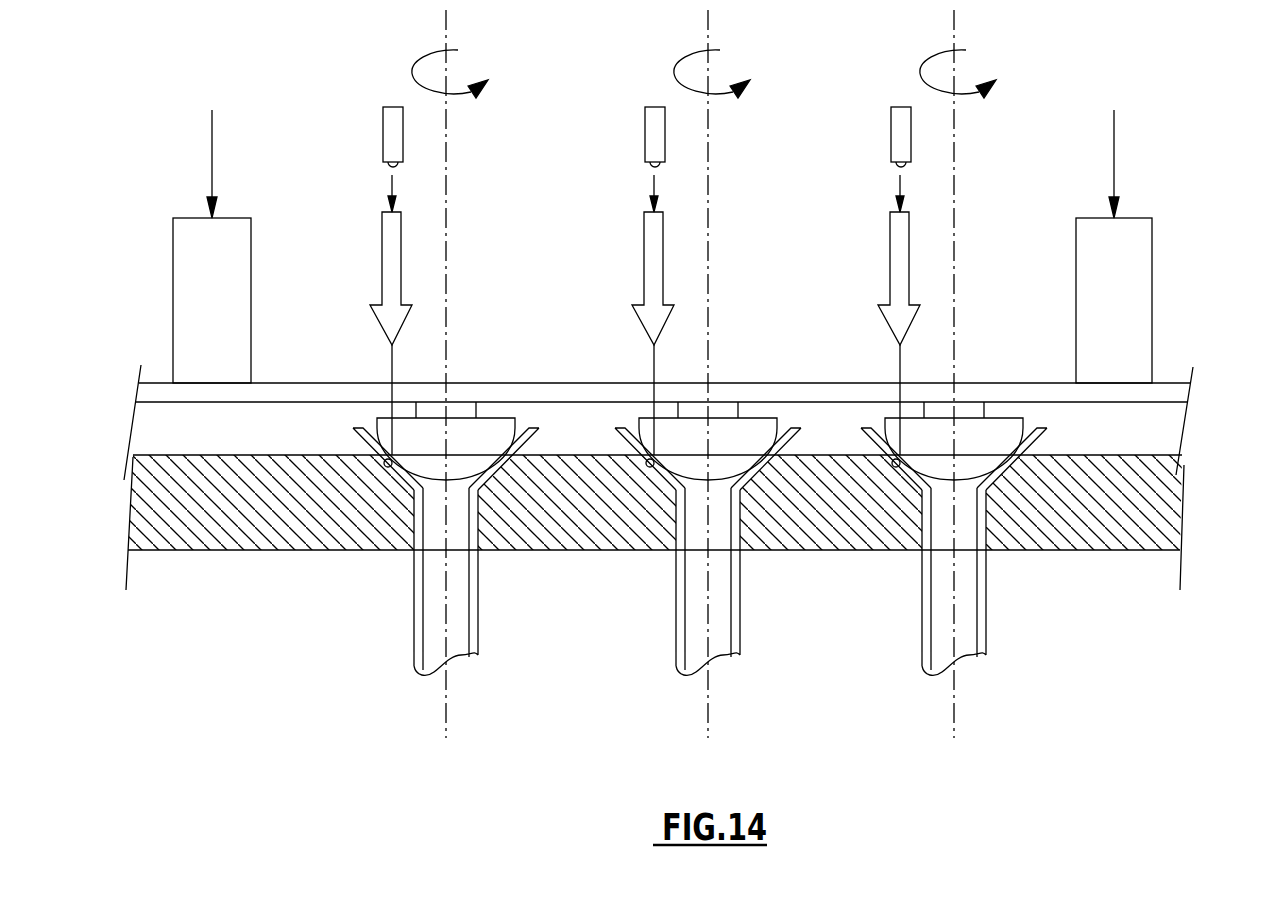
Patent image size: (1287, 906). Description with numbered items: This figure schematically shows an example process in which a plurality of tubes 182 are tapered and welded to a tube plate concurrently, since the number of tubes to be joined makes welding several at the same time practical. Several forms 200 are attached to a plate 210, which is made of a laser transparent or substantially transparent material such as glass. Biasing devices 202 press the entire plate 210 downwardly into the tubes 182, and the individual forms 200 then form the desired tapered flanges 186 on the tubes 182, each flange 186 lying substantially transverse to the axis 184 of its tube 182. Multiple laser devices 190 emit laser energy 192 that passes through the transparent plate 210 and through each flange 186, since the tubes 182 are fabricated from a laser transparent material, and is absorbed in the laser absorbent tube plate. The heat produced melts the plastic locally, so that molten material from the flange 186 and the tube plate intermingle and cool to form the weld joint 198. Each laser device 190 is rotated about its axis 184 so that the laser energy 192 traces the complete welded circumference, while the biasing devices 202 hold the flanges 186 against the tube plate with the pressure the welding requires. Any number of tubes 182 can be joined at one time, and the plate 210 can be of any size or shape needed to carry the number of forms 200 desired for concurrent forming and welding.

The tube 182 is at (478, 622).
The axis 184 is at (448, 727).
The flange 186 is at (510, 458).
The laser device 190 is at (388, 143).
The laser energy 192 is at (388, 250).
The weld joint 198 is at (400, 485).
The form 200 is at (500, 440).
The biasing device 202 is at (228, 318).
The plate 210 is at (980, 394).